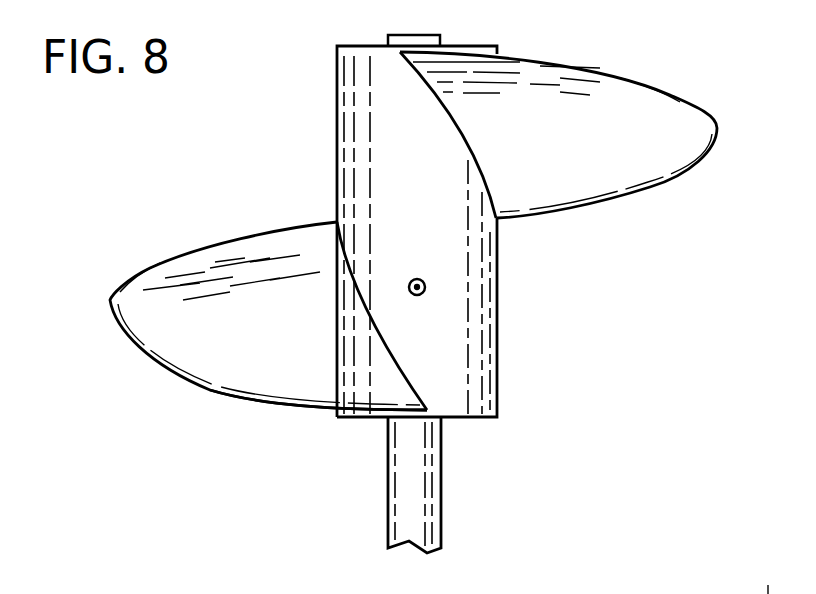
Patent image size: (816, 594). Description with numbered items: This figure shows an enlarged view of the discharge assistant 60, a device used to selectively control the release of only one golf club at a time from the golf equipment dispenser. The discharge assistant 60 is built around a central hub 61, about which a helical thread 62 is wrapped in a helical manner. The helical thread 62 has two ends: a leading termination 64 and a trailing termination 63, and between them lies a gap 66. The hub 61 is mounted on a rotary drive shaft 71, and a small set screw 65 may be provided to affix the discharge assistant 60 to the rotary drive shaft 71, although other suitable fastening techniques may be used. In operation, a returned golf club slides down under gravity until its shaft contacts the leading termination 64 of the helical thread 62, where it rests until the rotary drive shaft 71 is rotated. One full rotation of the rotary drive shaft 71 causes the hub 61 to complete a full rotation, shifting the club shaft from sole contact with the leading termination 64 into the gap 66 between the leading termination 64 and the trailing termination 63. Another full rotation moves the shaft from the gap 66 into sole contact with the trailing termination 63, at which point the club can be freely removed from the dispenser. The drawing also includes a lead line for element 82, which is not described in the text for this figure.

The discharge assistant 60 is at (427, 286).
The hub 61 is at (193, 270).
The helical thread 62 is at (683, 124).
The trailing termination 63 is at (533, 72).
The leading termination 64 is at (300, 383).
The set screw 65 is at (425, 290).
The gap 66 is at (557, 270).
The rotary drive shaft 71 is at (418, 480).
The drive member 82 is at (768, 593).